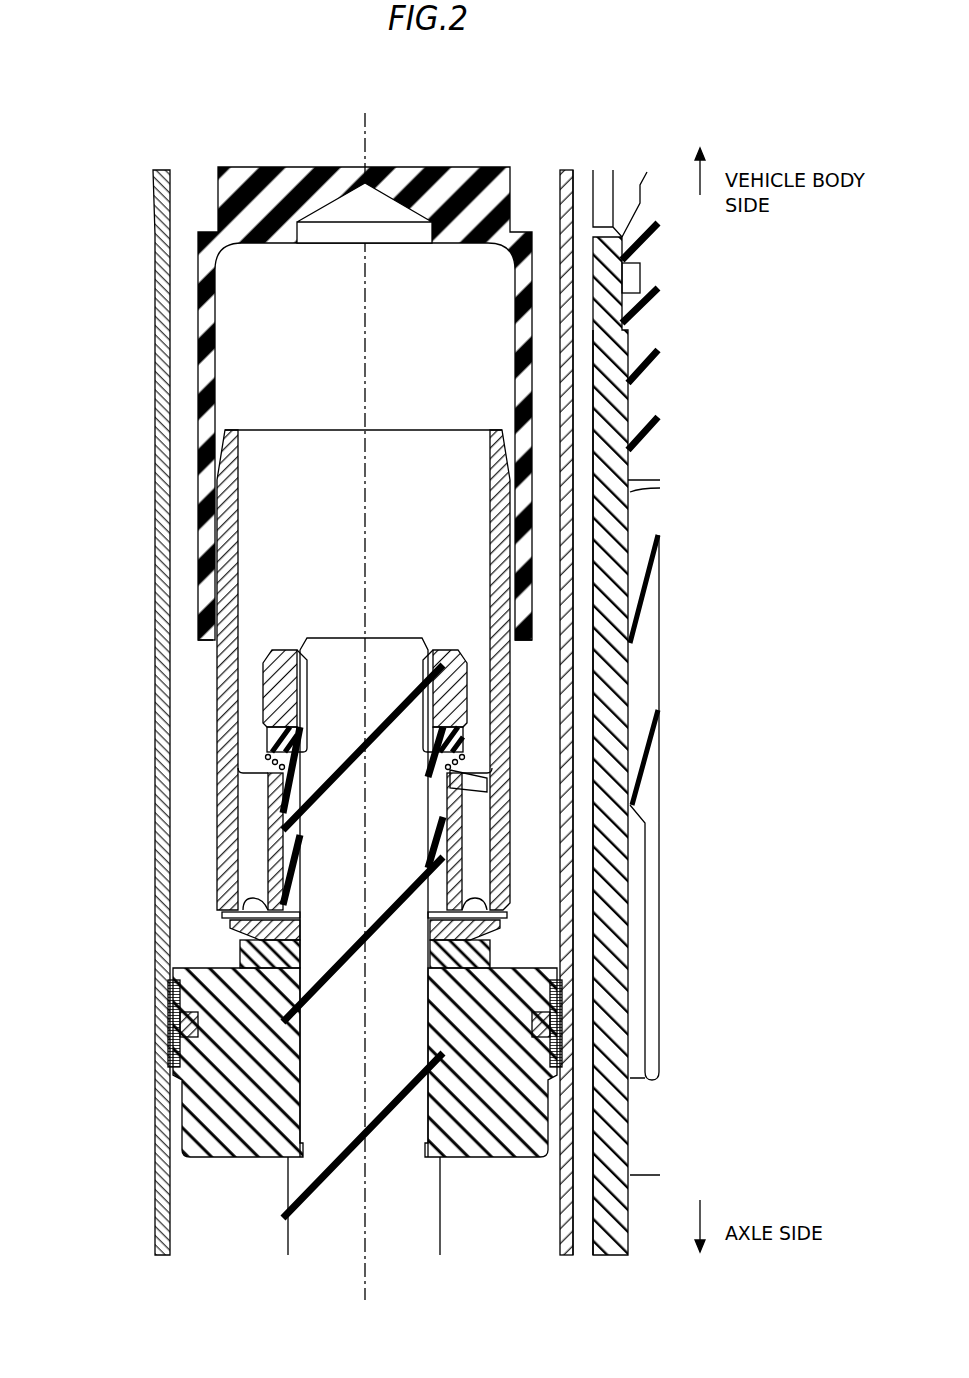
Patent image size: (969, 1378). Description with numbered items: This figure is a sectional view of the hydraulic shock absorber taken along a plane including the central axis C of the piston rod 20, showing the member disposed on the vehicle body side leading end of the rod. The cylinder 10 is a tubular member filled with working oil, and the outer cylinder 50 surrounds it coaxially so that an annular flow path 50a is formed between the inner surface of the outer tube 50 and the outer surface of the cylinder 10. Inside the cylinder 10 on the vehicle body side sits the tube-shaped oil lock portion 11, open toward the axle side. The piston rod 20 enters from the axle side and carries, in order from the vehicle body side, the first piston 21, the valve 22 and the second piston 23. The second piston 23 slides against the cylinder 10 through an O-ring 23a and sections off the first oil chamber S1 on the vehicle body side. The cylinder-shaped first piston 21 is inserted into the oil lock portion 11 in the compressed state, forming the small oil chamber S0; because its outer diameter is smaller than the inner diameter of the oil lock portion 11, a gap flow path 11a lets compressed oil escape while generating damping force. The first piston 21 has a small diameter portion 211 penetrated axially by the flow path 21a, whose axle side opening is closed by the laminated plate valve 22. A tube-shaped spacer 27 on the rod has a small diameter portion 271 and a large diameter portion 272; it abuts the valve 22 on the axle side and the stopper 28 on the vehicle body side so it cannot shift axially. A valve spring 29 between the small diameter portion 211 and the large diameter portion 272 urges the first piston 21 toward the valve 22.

The central axis C is at (364, 690).
The cylinder 10 is at (563, 350).
The oil lock portion 11 is at (527, 413).
The gap flow path 11a is at (515, 555).
The small oil chamber S0 is at (268, 292).
The first oil chamber S1 is at (197, 930).
The piston rod 20 is at (345, 650).
The first piston 21 is at (502, 658).
The flow path 21a is at (473, 837).
The small diameter portion 211 is at (280, 847).
The valve 22 is at (513, 912).
The second piston 23 is at (548, 1110).
The O-ring 23a is at (187, 1025).
The spacer 27 is at (248, 769).
The small diameter portion 271 is at (292, 812).
The large diameter portion 272 is at (288, 740).
The stopper 28 is at (287, 685).
The valve spring 29 is at (453, 768).
The outer cylinder 50 is at (613, 792).
The annular flow path 50a is at (585, 760).